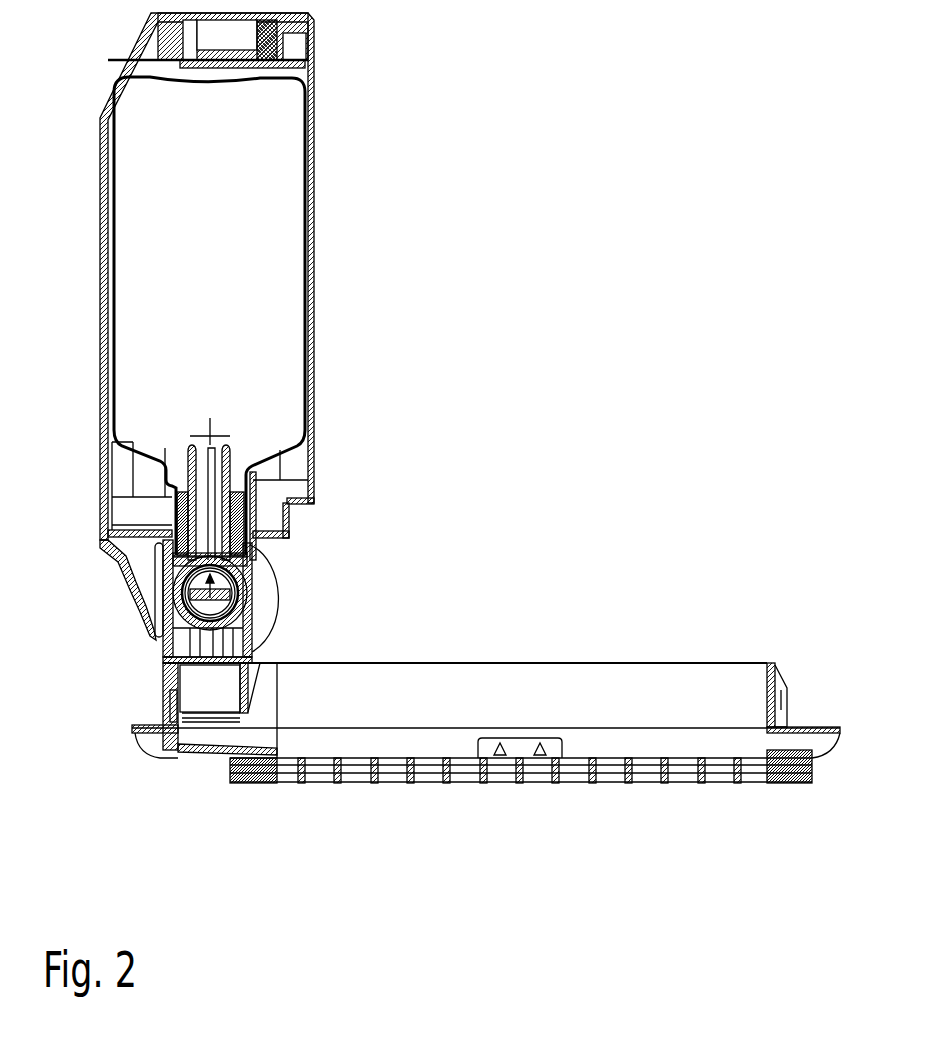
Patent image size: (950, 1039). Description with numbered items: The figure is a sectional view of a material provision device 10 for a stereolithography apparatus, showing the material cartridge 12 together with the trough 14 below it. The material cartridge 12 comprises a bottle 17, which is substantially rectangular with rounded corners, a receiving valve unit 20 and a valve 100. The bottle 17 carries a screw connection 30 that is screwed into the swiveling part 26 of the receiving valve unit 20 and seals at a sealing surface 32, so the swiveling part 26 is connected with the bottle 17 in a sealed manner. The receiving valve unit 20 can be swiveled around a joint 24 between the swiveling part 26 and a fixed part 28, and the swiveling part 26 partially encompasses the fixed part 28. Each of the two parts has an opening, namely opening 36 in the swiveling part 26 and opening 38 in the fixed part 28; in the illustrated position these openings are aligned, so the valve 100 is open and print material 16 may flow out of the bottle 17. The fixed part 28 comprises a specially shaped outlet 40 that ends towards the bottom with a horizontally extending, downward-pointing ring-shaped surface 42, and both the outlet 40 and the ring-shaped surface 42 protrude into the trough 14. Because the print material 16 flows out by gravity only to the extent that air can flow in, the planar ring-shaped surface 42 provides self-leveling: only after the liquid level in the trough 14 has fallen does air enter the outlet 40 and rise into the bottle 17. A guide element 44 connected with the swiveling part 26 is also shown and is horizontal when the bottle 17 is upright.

The material provision device 10 is at (300, 860).
The material cartridge 12 is at (434, 398).
The trough 14 is at (768, 708).
The print material 16 is at (388, 745).
The bottle 17 is at (277, 232).
The receiving valve unit 20 is at (450, 558).
The joint 24 is at (150, 569).
The swiveling part 26 is at (246, 560).
The fixed part 28 is at (197, 645).
The screw connection 30 is at (255, 515).
The sealing surface 32 is at (172, 508).
The opening 36 is at (216, 545).
The opening 38 is at (240, 594).
The outlet 40 is at (256, 672).
The ring-shaped surface 42 is at (202, 722).
The guide element 44 is at (238, 597).
The valve 100 is at (265, 573).